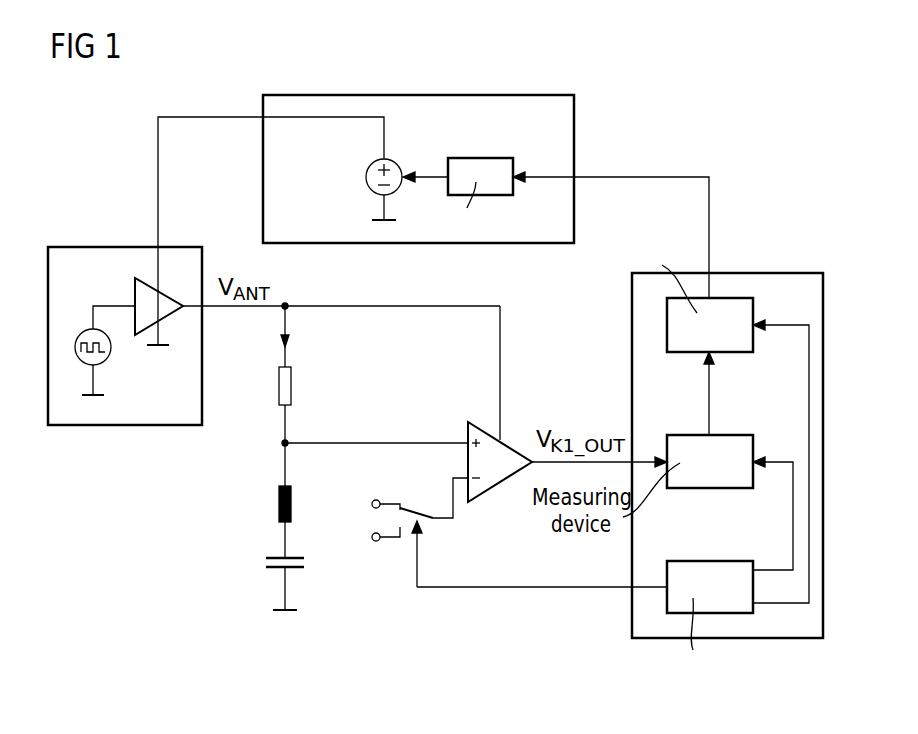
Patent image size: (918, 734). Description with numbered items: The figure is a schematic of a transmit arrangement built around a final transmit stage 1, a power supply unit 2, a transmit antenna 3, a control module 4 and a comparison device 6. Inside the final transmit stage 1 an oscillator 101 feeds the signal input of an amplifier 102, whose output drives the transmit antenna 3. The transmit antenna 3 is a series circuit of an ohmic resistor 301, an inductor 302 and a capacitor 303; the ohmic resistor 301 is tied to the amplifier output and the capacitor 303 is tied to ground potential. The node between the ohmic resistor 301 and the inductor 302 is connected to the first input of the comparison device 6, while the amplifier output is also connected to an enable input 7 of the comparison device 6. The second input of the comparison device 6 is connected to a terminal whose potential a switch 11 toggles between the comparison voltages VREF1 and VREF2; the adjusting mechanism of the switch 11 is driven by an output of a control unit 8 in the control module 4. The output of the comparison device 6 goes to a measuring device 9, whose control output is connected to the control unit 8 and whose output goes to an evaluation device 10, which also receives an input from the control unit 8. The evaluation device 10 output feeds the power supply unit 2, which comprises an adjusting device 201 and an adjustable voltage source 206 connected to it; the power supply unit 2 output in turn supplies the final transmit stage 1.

The final transmit stage 1 is at (125, 364).
The power supply unit 2 is at (418, 197).
The transmit antenna 3 is at (220, 456).
The control module 4 is at (715, 458).
The comparison device 6 is at (502, 485).
The enable input 7 is at (500, 440).
The control unit 8 is at (697, 560).
The measuring device 9 is at (728, 490).
The evaluation device 10 is at (728, 355).
The switch 11 is at (423, 524).
The oscillator 101 is at (110, 358).
The amplifier 102 is at (135, 293).
The adjusting device 201 is at (480, 158).
The adjustable voltage source 206 is at (398, 162).
The ohmic resistor 301 is at (279, 387).
The inductor 302 is at (279, 505).
The capacitor 303 is at (266, 563).